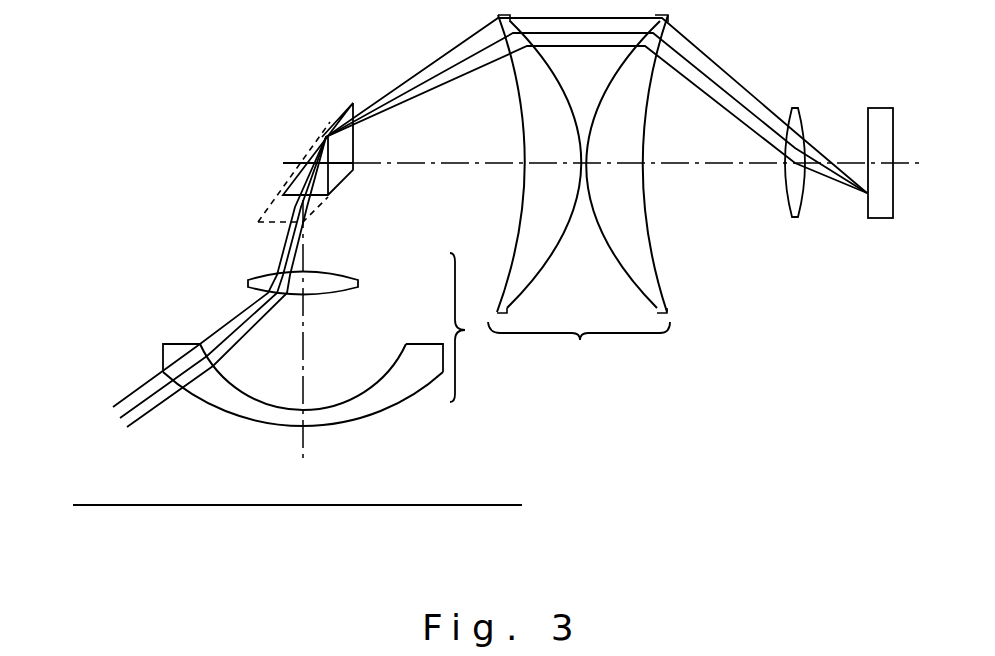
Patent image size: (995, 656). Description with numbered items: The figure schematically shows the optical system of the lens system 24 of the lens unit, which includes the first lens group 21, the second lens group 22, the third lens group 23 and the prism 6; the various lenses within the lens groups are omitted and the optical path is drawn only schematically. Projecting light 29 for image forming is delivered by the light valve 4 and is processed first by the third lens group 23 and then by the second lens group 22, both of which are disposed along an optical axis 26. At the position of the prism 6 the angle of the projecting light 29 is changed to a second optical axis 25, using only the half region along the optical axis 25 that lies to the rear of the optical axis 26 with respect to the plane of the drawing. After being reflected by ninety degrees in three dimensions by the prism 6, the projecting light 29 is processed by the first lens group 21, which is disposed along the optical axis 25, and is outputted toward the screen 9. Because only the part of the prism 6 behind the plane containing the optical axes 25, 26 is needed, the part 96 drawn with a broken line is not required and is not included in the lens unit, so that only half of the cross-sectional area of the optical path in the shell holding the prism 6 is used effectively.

The light valve 4 is at (877, 218).
The prism 6 is at (338, 108).
The screen 9 is at (257, 507).
The first lens group 21 is at (328, 339).
The second lens group 22 is at (579, 194).
The third lens group 23 is at (798, 103).
The lens system 24 is at (655, 369).
The optical axis 25 is at (303, 327).
The optical axis 26 is at (668, 163).
The projecting light 29 is at (150, 386).
The part shown by broken line 96 is at (305, 147).